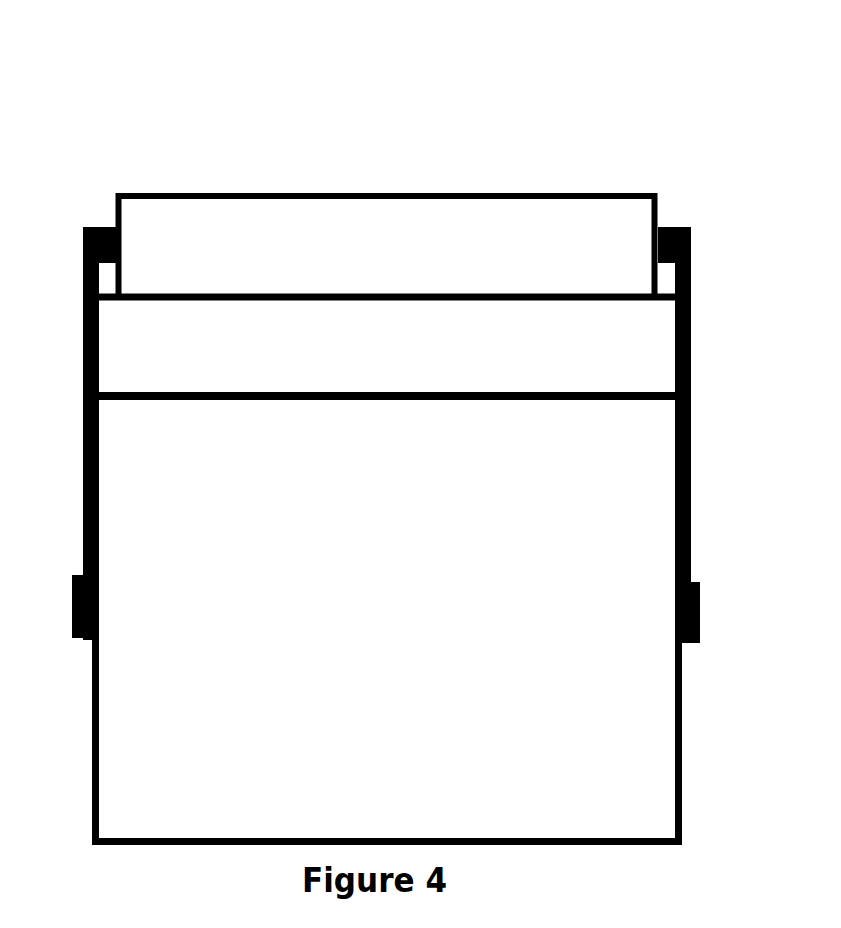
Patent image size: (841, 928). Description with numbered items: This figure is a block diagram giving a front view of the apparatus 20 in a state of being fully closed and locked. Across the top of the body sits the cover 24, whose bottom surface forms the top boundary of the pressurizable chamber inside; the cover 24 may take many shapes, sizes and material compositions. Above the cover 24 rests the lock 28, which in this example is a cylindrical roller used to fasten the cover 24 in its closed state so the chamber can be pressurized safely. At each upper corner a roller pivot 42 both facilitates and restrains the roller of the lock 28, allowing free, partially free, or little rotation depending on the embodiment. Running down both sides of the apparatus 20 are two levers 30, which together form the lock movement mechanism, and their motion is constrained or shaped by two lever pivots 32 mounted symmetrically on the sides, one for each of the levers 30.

The apparatus 20 is at (212, 135).
The cover 24 is at (563, 363).
The lock 28 is at (328, 258).
The lever 30 is at (83, 360).
The lever pivot 32 is at (85, 638).
The roller pivot 42 is at (95, 226).